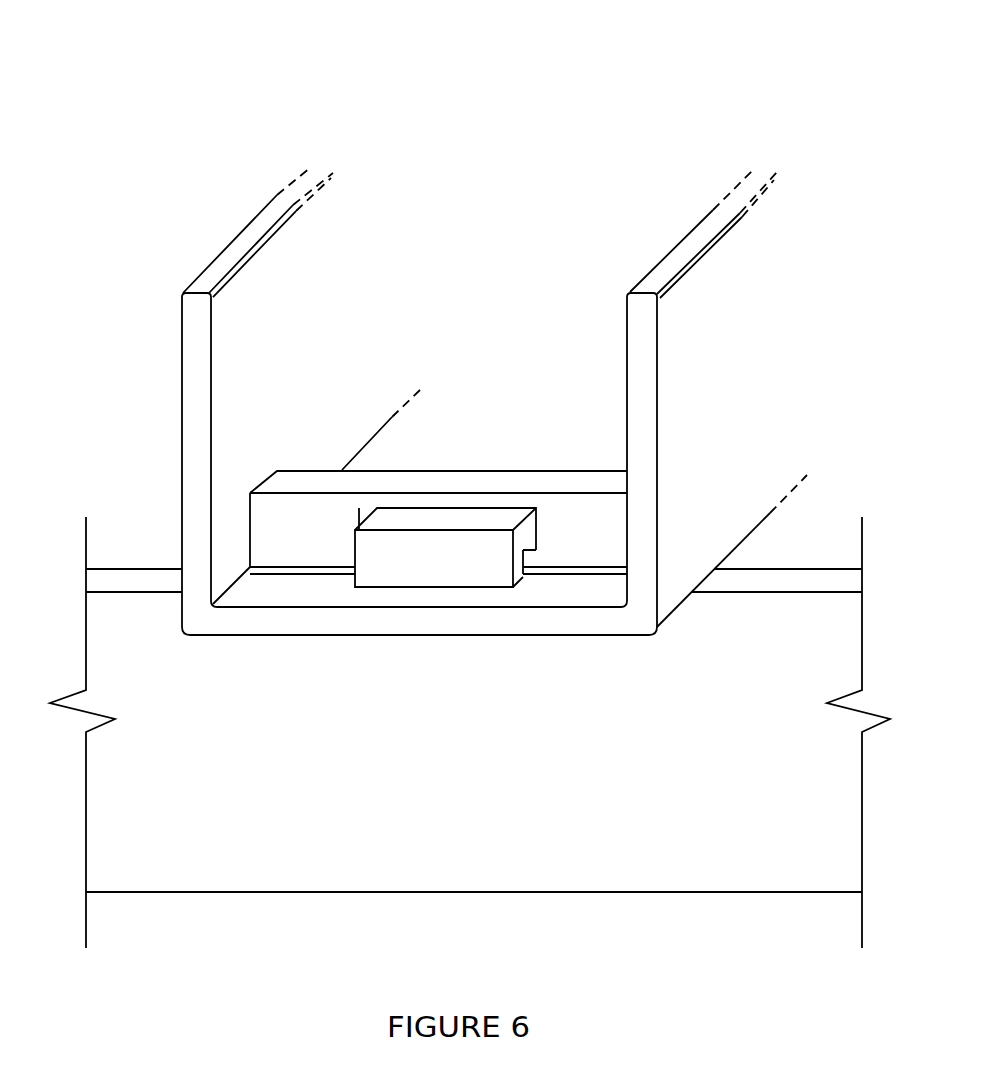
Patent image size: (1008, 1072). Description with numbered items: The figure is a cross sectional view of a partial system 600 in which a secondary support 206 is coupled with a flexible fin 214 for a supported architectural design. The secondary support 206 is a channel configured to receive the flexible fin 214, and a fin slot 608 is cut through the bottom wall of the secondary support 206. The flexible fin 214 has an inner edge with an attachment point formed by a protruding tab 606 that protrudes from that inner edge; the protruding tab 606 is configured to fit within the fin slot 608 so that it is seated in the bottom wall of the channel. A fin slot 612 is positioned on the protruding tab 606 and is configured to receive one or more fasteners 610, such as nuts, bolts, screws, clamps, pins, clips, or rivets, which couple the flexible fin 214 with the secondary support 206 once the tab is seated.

The partial system 600 is at (676, 60).
The secondary support 206 is at (182, 462).
The flexible fin 214 is at (167, 870).
The protruding tab 606 is at (490, 483).
The fin slot 608 is at (634, 566).
The fastener 610 is at (397, 547).
The fin slot 612 is at (536, 544).